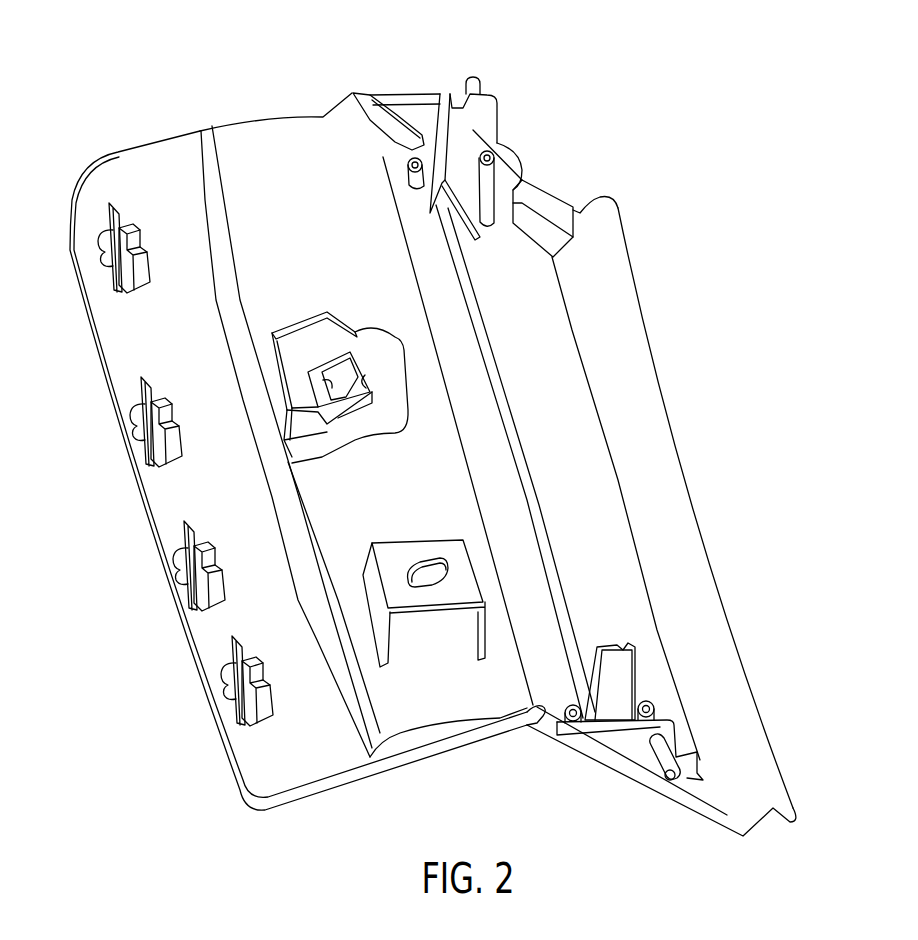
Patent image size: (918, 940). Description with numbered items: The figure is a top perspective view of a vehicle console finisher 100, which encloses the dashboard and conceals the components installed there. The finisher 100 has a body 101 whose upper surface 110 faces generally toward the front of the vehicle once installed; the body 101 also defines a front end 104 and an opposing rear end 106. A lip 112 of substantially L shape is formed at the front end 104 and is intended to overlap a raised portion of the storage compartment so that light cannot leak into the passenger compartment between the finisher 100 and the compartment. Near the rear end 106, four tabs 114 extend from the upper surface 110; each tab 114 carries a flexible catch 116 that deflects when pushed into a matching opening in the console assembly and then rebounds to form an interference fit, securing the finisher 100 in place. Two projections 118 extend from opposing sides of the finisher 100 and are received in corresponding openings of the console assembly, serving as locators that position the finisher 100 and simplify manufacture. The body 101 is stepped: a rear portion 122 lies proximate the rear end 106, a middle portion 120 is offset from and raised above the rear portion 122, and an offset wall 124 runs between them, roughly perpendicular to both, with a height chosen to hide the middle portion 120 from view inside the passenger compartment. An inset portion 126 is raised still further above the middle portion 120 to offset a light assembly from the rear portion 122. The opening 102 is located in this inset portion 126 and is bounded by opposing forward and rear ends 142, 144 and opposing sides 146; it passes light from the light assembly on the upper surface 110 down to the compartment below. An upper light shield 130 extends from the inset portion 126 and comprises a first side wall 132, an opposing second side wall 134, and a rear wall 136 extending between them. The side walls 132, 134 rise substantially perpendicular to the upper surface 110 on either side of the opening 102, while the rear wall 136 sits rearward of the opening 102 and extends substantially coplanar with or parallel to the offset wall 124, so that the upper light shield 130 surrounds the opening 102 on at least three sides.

The finisher 100 is at (634, 32).
The body 101 is at (235, 118).
The opening 102 is at (353, 377).
The front end 104 is at (697, 518).
The rear end 106 is at (102, 377).
The upper surface 110 is at (302, 132).
The lip 112 is at (713, 603).
The tabs 114 is at (132, 275).
The flexible catch 116 is at (107, 233).
The projections 118 is at (476, 82).
The middle portion 120 is at (250, 167).
The rear portion 122 is at (138, 185).
The offset wall 124 is at (277, 497).
The inset portion 126 is at (377, 423).
The upper light shield 130 is at (292, 320).
The first side wall 132 is at (323, 325).
The second side wall 134 is at (310, 423).
The rear wall 136 is at (270, 380).
The forward end 142 is at (367, 393).
The rear end 144 is at (323, 385).
The sides 146 is at (338, 347).